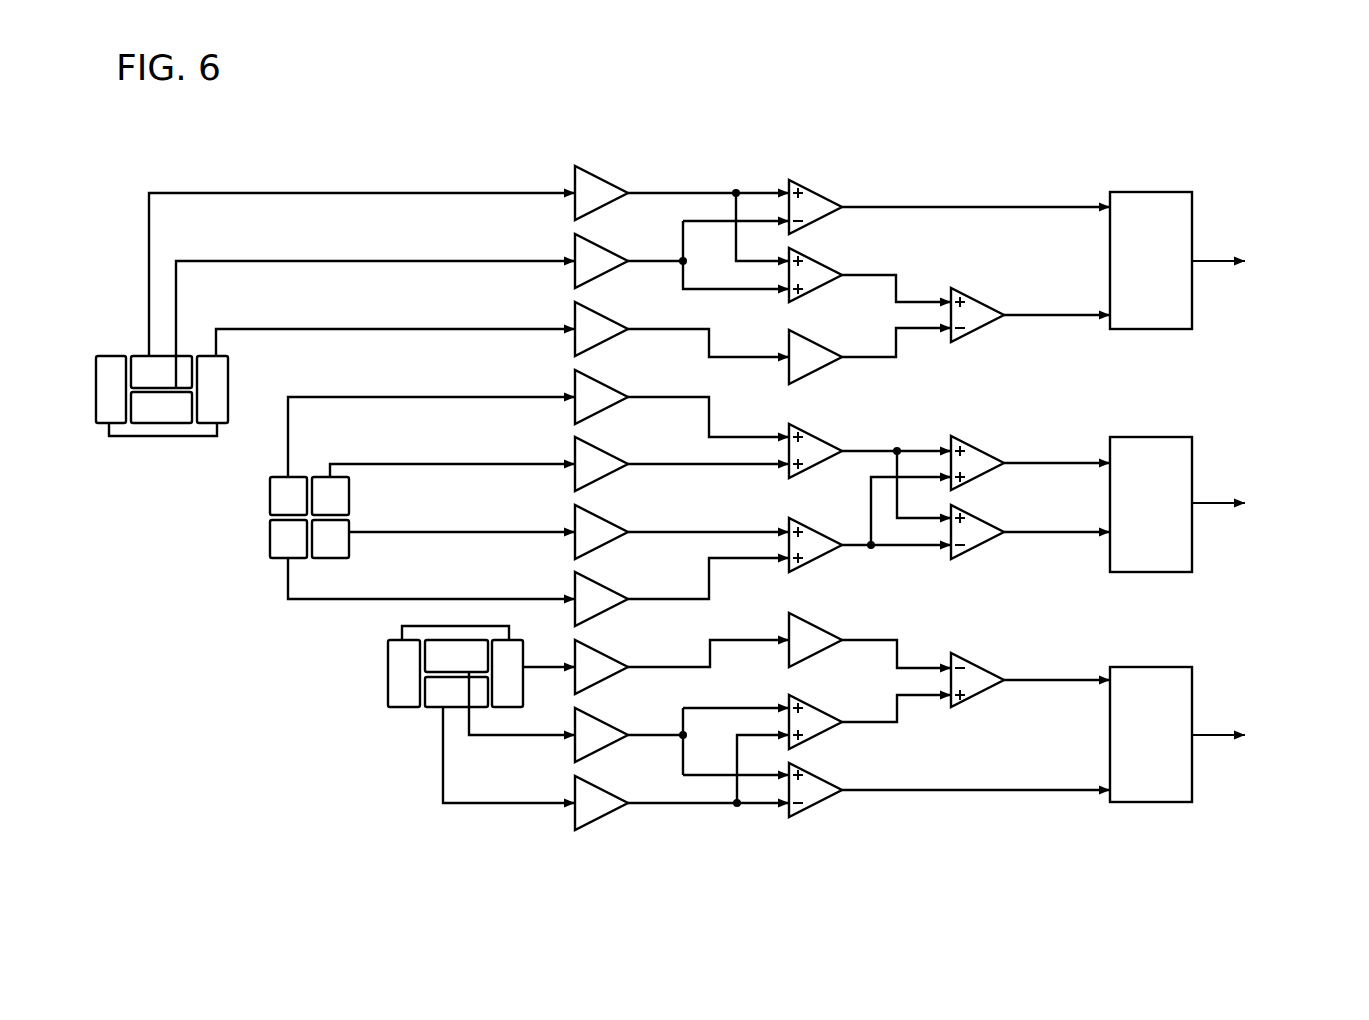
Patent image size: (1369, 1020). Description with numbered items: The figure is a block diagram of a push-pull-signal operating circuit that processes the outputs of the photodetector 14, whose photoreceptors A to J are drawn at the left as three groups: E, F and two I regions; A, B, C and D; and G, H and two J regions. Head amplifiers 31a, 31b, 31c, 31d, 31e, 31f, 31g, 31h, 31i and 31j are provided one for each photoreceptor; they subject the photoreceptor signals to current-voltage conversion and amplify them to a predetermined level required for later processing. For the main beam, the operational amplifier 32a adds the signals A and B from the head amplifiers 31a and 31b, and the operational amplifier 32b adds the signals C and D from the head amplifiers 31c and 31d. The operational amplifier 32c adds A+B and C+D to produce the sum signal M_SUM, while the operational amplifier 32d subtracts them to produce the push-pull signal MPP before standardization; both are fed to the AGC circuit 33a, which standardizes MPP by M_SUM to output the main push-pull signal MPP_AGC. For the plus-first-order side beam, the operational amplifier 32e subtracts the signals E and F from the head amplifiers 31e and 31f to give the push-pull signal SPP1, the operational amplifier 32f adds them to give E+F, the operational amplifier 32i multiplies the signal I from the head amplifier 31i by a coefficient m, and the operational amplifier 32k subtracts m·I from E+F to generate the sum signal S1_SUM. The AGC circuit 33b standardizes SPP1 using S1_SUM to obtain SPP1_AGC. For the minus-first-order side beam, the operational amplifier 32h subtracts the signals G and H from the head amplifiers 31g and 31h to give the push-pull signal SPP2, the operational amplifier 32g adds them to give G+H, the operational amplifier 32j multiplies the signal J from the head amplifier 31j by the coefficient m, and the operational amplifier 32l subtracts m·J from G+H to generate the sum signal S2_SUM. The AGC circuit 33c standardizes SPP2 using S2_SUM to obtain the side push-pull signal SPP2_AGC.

The photodetector 14 is at (376, 741).
The head amplifier 31a is at (603, 409).
The head amplifier 31b is at (603, 476).
The head amplifier 31c is at (603, 544).
The head amplifier 31d is at (603, 611).
The head amplifier 31e is at (603, 205).
The head amplifier 31f is at (603, 273).
The head amplifier 31g is at (603, 747).
The head amplifier 31h is at (603, 815).
The head amplifier 31i is at (603, 341).
The head amplifier 31j is at (603, 679).
The operational amplifier 32a is at (817, 463).
The operational amplifier 32b is at (817, 557).
The operational amplifier 32c is at (977, 446).
The operational amplifier 32d is at (979, 544).
The operational amplifier 32e is at (817, 219).
The operational amplifier 32f is at (817, 287).
The operational amplifier 32g is at (817, 734).
The operational amplifier 32h is at (817, 802).
The operational amplifier 32i is at (817, 369).
The operational amplifier 32j is at (817, 652).
The operational amplifier 32k is at (979, 327).
The operational amplifier 32l is at (979, 692).
The AGC circuit 33a is at (1150, 437).
The AGC circuit 33b is at (1150, 192).
The AGC circuit 33c is at (1150, 667).